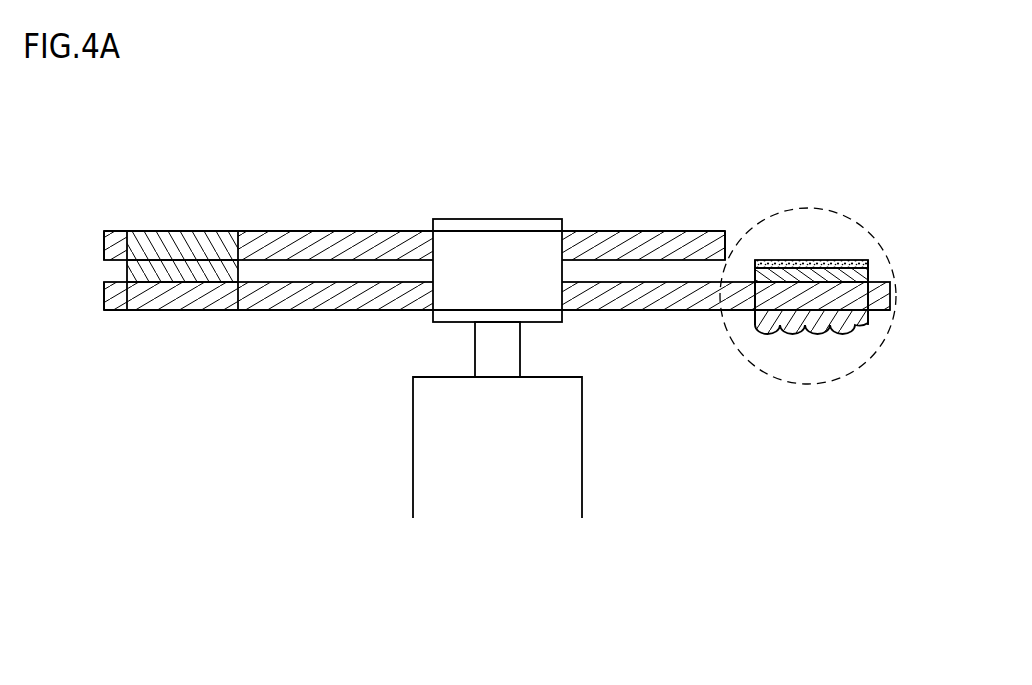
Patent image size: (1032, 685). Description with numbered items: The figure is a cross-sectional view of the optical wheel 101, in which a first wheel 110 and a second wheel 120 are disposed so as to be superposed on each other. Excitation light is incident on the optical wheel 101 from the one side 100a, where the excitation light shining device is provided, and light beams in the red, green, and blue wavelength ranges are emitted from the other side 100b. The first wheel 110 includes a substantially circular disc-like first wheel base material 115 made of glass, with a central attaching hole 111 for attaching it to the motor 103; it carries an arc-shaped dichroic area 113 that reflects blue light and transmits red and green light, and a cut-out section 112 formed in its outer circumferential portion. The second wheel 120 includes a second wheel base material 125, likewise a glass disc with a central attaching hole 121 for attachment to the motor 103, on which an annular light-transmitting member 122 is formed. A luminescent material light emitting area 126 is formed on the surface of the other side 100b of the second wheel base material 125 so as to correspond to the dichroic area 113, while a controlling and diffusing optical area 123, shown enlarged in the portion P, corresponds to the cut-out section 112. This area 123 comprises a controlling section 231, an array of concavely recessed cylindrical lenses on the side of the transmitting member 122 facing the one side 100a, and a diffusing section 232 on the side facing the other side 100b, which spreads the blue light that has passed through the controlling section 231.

The first wheel 110 is at (97, 207).
The first wheel base material 115 is at (343, 240).
The dichroic area 113 is at (218, 247).
The cut-out section 112 is at (733, 257).
The attaching hole 111 is at (562, 232).
The luminescent material light emitting area 126 is at (137, 270).
The second wheel 120 is at (97, 333).
The second wheel base material 125 is at (343, 302).
The transmitting member 122 is at (220, 295).
The attaching hole 121 is at (562, 318).
The motor 103 is at (452, 474).
The diffusing section 232 is at (826, 258).
The controlling and diffusing optical area 123 is at (852, 250).
The controlling section 231 is at (806, 325).
The enlarged portion P is at (857, 213).
The other side 100b is at (182, 220).
The one side 100a is at (182, 320).
The optical wheel 101 is at (123, 393).